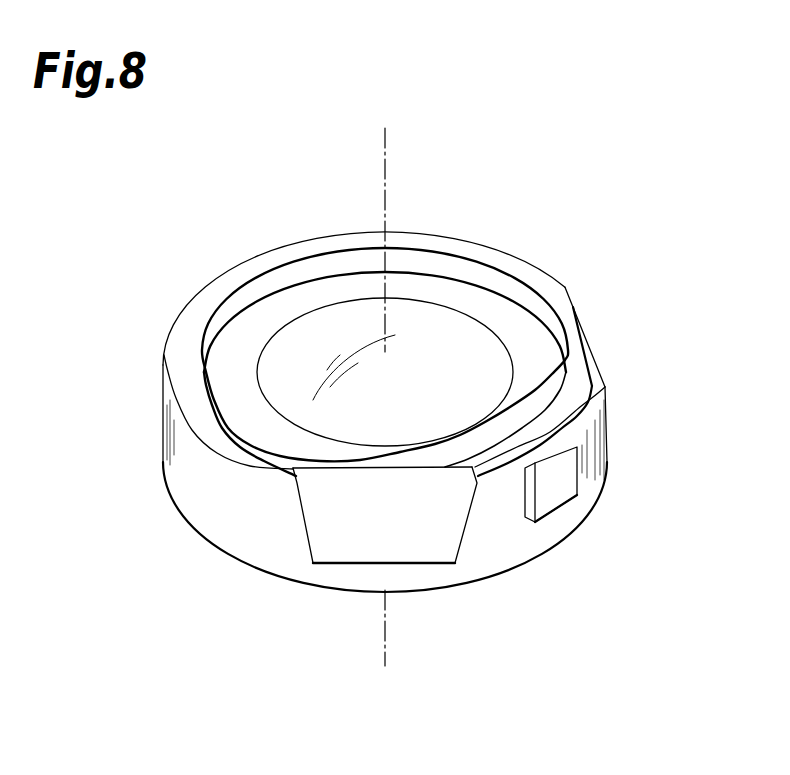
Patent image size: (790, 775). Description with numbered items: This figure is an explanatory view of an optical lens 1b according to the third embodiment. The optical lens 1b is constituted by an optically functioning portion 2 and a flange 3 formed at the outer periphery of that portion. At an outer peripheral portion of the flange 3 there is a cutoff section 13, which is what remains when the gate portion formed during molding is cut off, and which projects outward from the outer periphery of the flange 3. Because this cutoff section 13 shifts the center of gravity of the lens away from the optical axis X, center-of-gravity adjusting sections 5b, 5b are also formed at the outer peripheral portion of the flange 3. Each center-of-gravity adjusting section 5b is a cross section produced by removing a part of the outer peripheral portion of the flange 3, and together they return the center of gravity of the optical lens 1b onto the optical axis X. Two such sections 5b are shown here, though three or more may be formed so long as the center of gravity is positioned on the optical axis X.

The optical lens 1b is at (264, 172).
The optical axis X is at (385, 160).
The optically functioning portion 2 is at (283, 400).
The flange 3 is at (520, 268).
The center-of-gravity adjusting section 5b is at (593, 371).
The cutoff section 13 is at (556, 493).